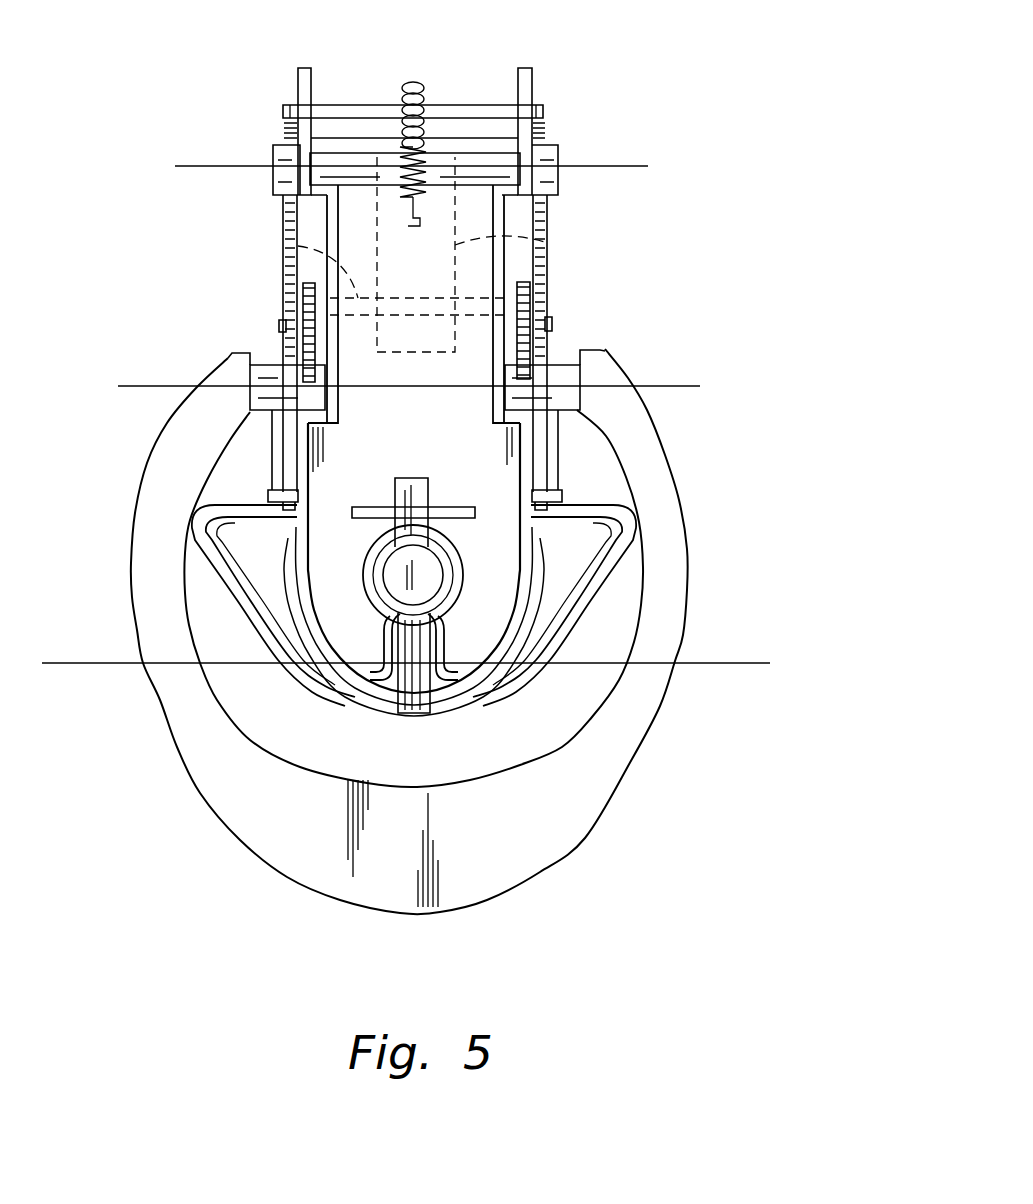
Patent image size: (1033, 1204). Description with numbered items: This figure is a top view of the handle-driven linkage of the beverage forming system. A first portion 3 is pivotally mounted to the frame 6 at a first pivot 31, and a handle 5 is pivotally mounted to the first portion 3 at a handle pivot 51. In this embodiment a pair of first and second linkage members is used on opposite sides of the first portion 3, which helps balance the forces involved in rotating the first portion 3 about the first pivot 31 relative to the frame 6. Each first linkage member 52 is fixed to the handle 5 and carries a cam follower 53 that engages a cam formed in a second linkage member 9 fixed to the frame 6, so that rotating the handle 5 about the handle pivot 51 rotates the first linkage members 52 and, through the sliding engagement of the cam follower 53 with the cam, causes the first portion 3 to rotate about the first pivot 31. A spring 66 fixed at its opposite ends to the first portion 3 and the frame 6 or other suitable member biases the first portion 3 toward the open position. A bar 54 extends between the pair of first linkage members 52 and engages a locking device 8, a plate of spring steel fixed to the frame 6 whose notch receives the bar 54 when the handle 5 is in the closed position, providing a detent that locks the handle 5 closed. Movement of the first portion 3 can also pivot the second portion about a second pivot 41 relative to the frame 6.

The first portion 3 is at (367, 650).
The handle 5 is at (538, 848).
The frame 6 is at (283, 208).
The locking device 8 is at (548, 243).
The second linkage member 9 is at (283, 345).
The first pivot 31 is at (621, 166).
The second pivot 41 is at (740, 668).
The handle pivot 51 is at (650, 378).
The first linkage member 52 is at (303, 292).
The cam follower 53 is at (280, 326).
The bar 54 is at (298, 247).
The spring 66 is at (418, 82).